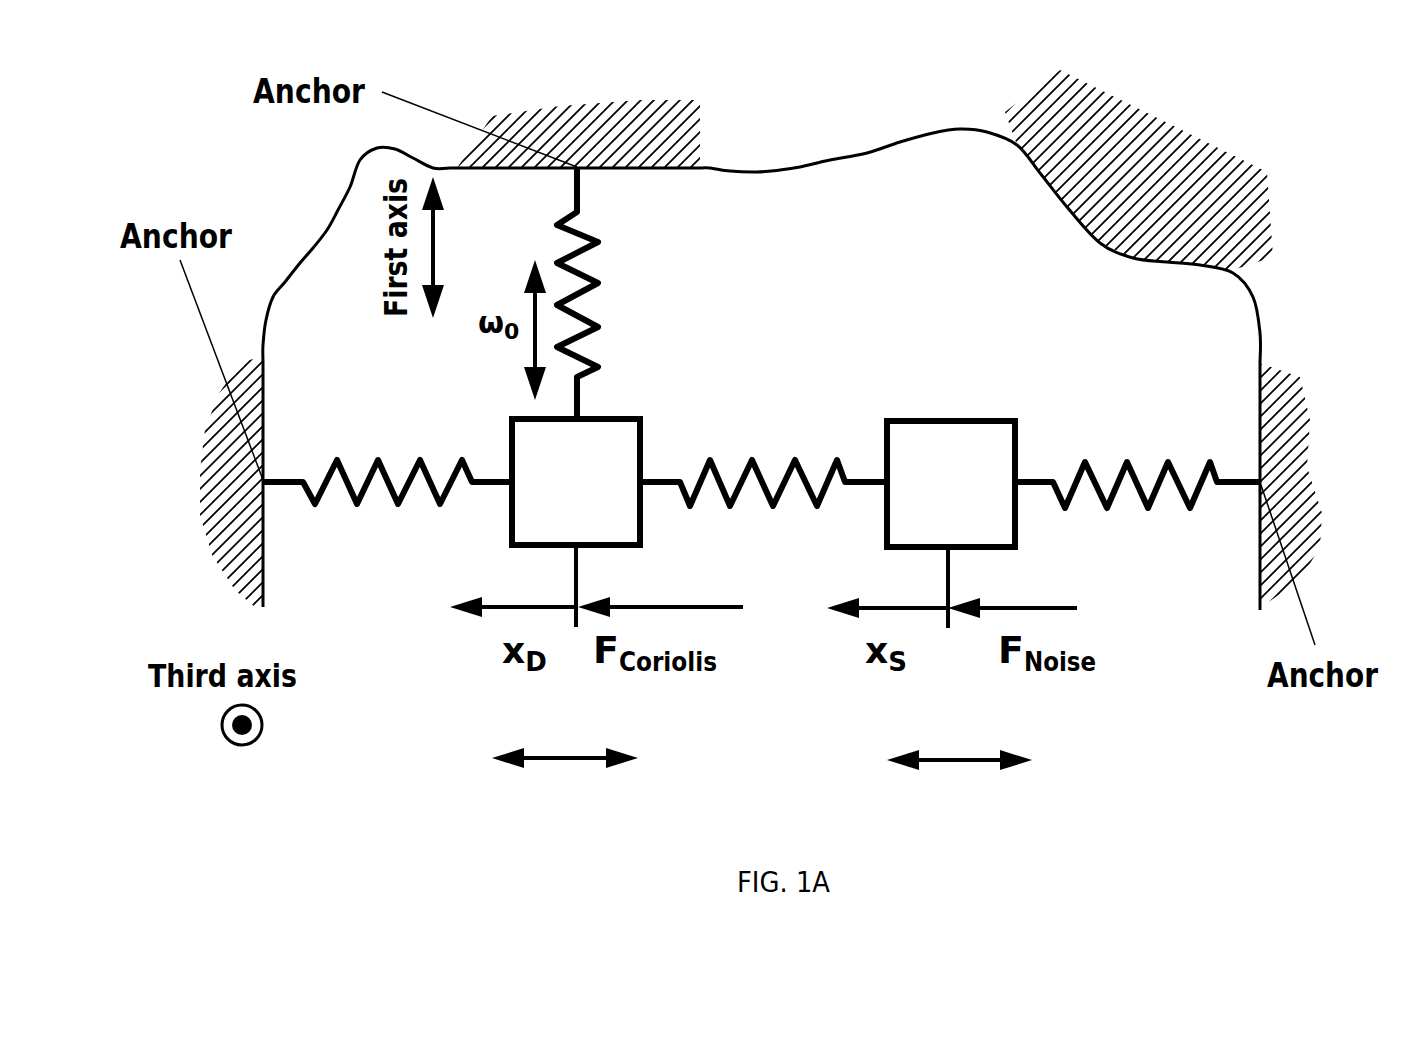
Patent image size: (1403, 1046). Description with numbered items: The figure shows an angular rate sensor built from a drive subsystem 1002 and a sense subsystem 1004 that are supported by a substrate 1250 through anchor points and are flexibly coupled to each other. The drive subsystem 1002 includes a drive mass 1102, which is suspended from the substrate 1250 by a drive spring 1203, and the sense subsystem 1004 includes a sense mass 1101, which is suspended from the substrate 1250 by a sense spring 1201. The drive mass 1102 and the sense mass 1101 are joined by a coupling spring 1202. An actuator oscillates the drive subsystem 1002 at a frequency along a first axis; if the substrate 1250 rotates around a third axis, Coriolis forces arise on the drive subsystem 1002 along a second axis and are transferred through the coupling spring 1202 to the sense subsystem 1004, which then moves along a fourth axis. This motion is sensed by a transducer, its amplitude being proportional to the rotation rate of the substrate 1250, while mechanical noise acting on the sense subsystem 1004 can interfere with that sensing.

The substrate 1250 is at (1077, 147).
The drive mass 1102 is at (597, 450).
The sense mass 1101 is at (930, 450).
The drive spring 1203 is at (357, 445).
The coupling spring 1202 is at (733, 447).
The sense spring 1201 is at (1113, 450).
The drive subsystem 1002 is at (567, 767).
The sense subsystem 1004 is at (964, 769).